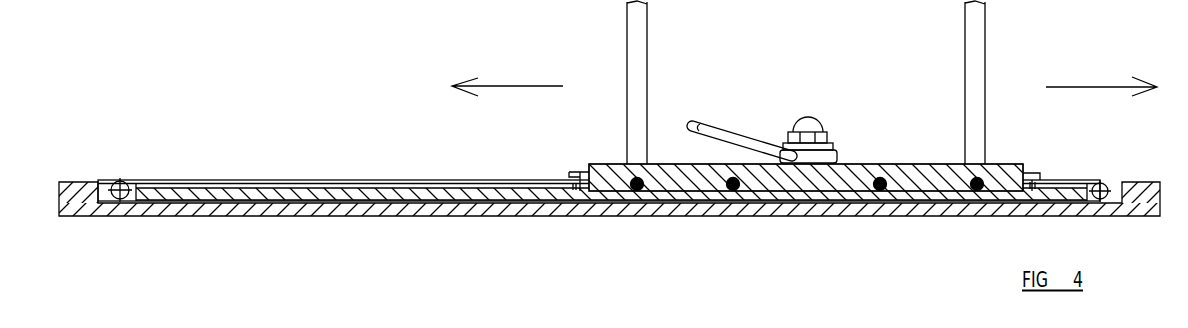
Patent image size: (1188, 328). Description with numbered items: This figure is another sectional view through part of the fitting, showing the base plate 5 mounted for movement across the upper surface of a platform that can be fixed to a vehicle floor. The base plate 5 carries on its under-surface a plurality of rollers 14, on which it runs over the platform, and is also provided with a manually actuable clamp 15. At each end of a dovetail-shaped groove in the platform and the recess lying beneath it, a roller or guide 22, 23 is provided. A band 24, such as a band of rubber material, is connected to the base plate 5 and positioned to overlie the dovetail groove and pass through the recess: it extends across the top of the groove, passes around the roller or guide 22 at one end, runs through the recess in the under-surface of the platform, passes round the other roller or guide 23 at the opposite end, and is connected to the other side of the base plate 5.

The base plate 5 is at (863, 163).
The rollers 14 is at (635, 190).
The manually actuable clamp 15 is at (777, 140).
The roller or guide 22 is at (121, 181).
The roller or guide 23 is at (1103, 183).
The band 24 is at (250, 180).